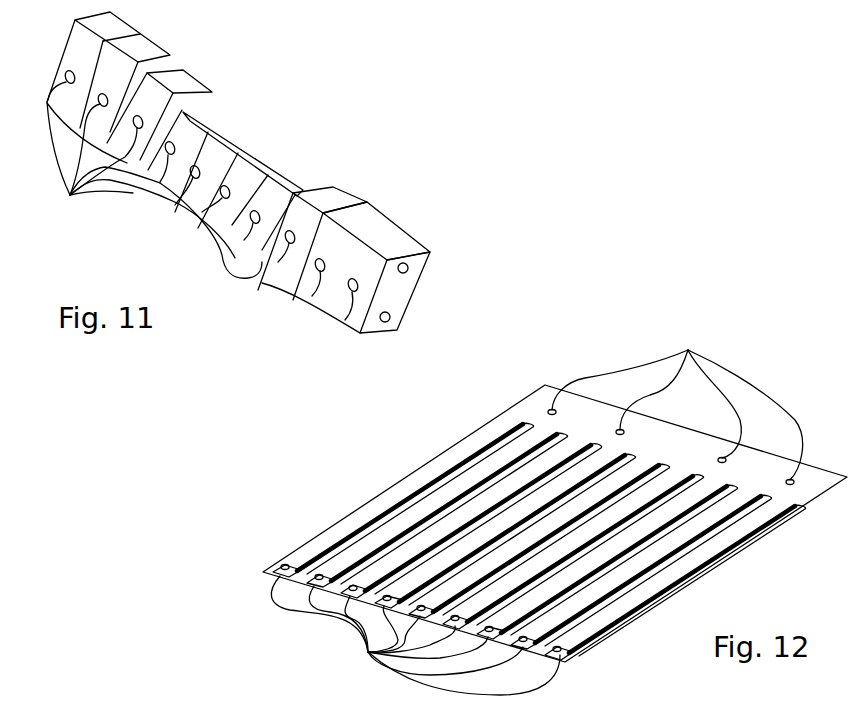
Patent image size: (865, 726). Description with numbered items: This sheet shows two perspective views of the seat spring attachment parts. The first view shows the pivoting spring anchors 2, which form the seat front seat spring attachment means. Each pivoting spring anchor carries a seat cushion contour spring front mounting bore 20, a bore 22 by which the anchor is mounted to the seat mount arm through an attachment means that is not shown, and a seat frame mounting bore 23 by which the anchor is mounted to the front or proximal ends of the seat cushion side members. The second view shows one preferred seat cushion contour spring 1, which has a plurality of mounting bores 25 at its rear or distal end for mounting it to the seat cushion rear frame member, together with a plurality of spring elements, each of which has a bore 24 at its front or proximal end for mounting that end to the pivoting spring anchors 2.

In FIG. 12, the seat cushion contour spring 1 is at (664, 457).
In FIG. 11, the pivoting spring anchors 2 is at (338, 147).
In FIG. 11, the seat cushion contour spring front mounting bore 20 is at (70, 195).
In FIG. 11, the bore 22 is at (411, 268).
In FIG. 11, the seat frame mounting bore 23 is at (392, 321).
In FIG. 12, the bore 24 is at (368, 652).
In FIG. 12, the mounting bores 25 is at (690, 348).